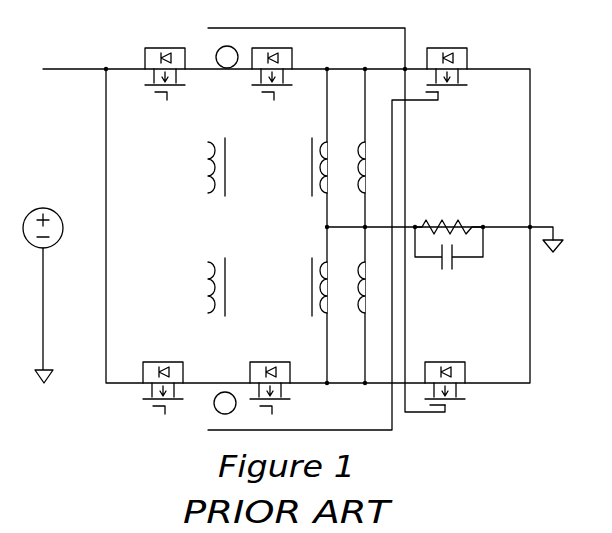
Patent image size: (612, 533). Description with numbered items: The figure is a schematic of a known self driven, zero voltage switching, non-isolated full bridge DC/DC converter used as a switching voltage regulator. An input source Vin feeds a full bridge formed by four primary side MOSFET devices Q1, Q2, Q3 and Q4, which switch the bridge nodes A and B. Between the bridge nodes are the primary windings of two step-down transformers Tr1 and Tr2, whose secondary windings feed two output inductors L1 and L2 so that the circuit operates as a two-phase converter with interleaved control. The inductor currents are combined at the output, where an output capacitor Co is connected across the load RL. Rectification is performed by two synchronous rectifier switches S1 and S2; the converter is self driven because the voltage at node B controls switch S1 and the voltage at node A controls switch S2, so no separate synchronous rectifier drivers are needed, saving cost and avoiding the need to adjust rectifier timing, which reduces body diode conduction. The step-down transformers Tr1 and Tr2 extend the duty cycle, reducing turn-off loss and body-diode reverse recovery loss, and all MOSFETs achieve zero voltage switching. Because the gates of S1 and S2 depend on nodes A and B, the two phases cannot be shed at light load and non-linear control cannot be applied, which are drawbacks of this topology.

The input voltage source Vin is at (50, 295).
The primary side switch Q1 is at (149, 73).
The primary side switch Q2 is at (286, 74).
The primary side switch Q3 is at (279, 390).
The primary side switch Q4 is at (147, 389).
The synchronous rectifier switch S1 is at (452, 82).
The synchronous rectifier switch S2 is at (458, 381).
The step-down transformer Tr1 is at (271, 167).
The step-down transformer Tr2 is at (271, 287).
The output inductor L1 is at (372, 167).
The output inductor L2 is at (372, 287).
The load resistor RL is at (449, 216).
The output capacitor Co is at (449, 258).
The node A is at (227, 57).
The node B is at (225, 403).